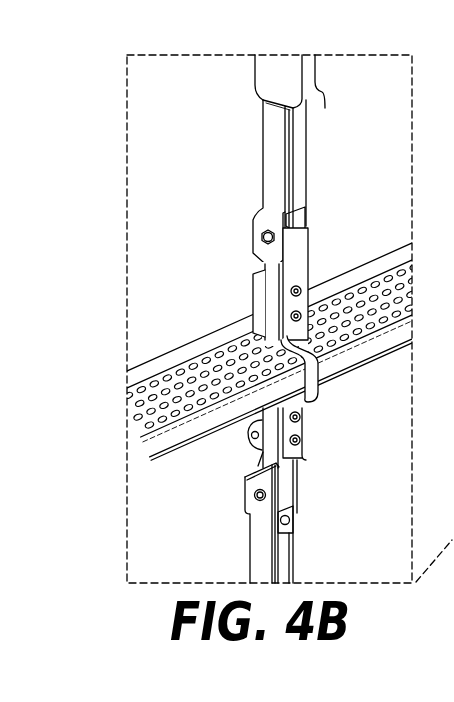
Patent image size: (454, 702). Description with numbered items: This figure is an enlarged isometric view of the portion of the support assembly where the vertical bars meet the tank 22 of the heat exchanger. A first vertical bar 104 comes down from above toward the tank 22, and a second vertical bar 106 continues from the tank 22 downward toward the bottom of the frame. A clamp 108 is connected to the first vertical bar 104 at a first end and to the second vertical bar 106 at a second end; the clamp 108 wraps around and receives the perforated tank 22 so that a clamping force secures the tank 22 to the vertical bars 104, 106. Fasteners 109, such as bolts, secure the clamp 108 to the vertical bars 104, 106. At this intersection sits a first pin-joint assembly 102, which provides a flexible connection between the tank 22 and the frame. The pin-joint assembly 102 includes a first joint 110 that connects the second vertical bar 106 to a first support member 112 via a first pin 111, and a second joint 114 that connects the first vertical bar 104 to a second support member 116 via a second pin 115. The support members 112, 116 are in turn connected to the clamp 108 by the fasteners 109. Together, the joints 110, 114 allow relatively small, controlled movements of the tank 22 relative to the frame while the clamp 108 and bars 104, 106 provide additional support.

The tank 22 is at (160, 360).
The pin-joint assembly 102 is at (295, 391).
The first vertical bar 104 is at (325, 108).
The second vertical bar 106 is at (292, 559).
The clamp 108 is at (292, 354).
The fasteners 109 is at (306, 292).
The first joint 110 is at (257, 557).
The first pin 111 is at (254, 497).
The first support member 112 is at (260, 460).
The second joint 114 is at (273, 147).
The second pin 115 is at (262, 238).
The second support member 116 is at (293, 224).